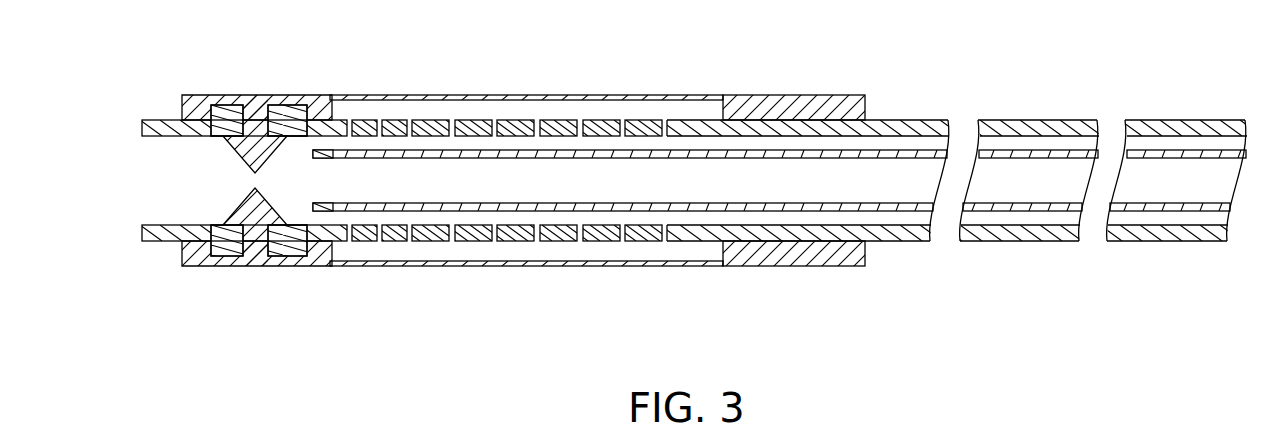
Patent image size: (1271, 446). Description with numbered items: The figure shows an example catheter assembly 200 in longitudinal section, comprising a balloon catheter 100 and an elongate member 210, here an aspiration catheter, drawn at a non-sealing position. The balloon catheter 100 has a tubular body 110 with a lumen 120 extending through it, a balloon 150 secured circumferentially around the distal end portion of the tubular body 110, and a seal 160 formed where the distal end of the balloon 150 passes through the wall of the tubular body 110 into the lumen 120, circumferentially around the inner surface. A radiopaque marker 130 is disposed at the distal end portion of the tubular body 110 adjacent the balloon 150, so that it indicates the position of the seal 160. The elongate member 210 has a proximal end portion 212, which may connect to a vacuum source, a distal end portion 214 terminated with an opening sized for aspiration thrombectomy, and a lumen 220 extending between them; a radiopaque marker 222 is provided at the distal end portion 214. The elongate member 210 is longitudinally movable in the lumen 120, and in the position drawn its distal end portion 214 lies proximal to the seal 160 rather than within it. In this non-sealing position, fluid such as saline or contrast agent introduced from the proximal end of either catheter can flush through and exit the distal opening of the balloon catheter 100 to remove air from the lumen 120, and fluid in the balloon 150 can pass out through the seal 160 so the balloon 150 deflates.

The balloon catheter 100 is at (890, 108).
The tubular body 110 is at (1042, 108).
The lumen 120 is at (205, 220).
The radiopaque marker 130 is at (286, 95).
The balloon 150 is at (530, 90).
The seal 160 is at (238, 155).
The catheter assembly 200 is at (759, 39).
The elongate member 210 is at (898, 222).
The proximal end portion 212 is at (1177, 212).
The distal end portion 214 is at (333, 203).
The lumen 220 is at (612, 191).
The radiopaque marker 222 is at (325, 212).